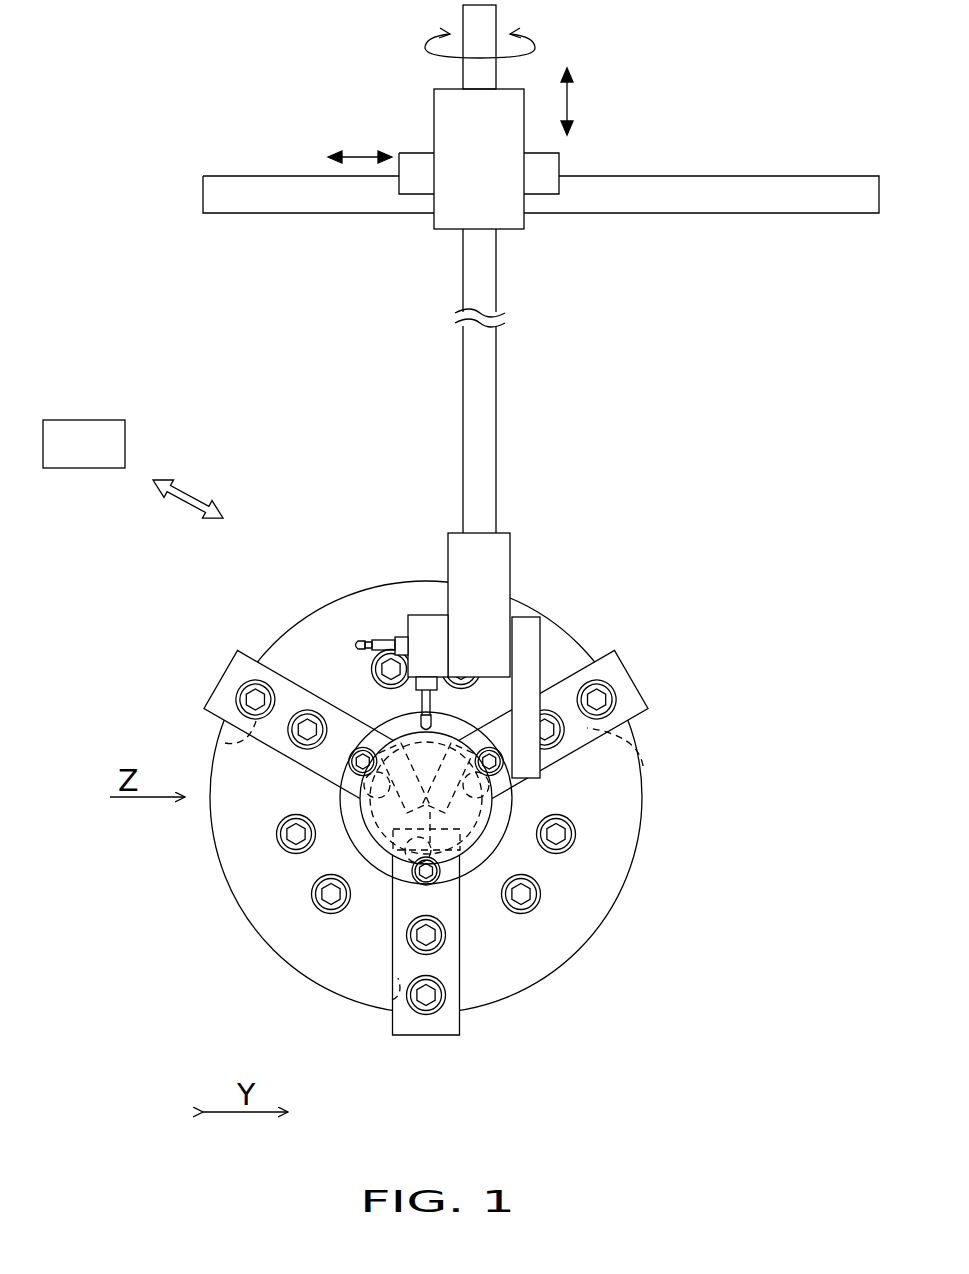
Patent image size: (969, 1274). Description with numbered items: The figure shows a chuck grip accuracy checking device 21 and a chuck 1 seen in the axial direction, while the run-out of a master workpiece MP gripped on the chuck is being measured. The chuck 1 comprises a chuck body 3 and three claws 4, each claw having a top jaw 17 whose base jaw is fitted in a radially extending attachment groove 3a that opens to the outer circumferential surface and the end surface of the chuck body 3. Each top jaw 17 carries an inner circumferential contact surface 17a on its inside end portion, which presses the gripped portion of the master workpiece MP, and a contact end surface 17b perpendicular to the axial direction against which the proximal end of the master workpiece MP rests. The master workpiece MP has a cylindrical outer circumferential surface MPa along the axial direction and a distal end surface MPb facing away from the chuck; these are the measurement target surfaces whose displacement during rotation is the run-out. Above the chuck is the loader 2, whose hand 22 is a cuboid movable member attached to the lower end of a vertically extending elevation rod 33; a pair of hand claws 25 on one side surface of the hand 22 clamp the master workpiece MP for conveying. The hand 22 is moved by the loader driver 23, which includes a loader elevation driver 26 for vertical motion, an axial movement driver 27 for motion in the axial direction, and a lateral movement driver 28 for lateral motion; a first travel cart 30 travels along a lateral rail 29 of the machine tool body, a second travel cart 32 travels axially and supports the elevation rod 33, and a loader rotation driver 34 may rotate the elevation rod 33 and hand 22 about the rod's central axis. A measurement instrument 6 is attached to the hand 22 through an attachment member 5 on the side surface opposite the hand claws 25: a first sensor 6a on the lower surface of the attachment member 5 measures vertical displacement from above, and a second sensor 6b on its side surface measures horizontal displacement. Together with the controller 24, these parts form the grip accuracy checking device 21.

The chuck 1 is at (578, 592).
The loader 2 is at (702, 92).
The chuck body 3 is at (380, 585).
The attachment groove 3a is at (225, 743).
The claw 4 is at (215, 668).
The attachment member 5 is at (430, 625).
The measurement instrument 6 is at (362, 636).
The first sensor 6a is at (420, 702).
The second sensor 6b is at (360, 640).
The top jaw 17 is at (245, 665).
The inner circumferential contact surface 17a is at (343, 793).
The contact end surface 17b is at (387, 753).
The grip accuracy checking device 21 is at (767, 85).
The hand 22 is at (500, 565).
The loader driver 23 is at (640, 115).
The controller 24 is at (83, 452).
The hand claw 25 is at (530, 645).
The loader elevation driver 26 is at (415, 117).
The axial movement driver 27 is at (437, 216).
The lateral movement driver 28 is at (437, 216).
The lateral rail 29 is at (782, 190).
The first travel cart 30 is at (415, 187).
The second travel cart 32 is at (415, 117).
The elevation rod 33 is at (490, 381).
The loader rotation driver 34 is at (445, 108).
The master workpiece MP is at (368, 840).
The cylindrical outer circumferential surface MPa is at (483, 808).
The distal end surface MPb is at (460, 852).